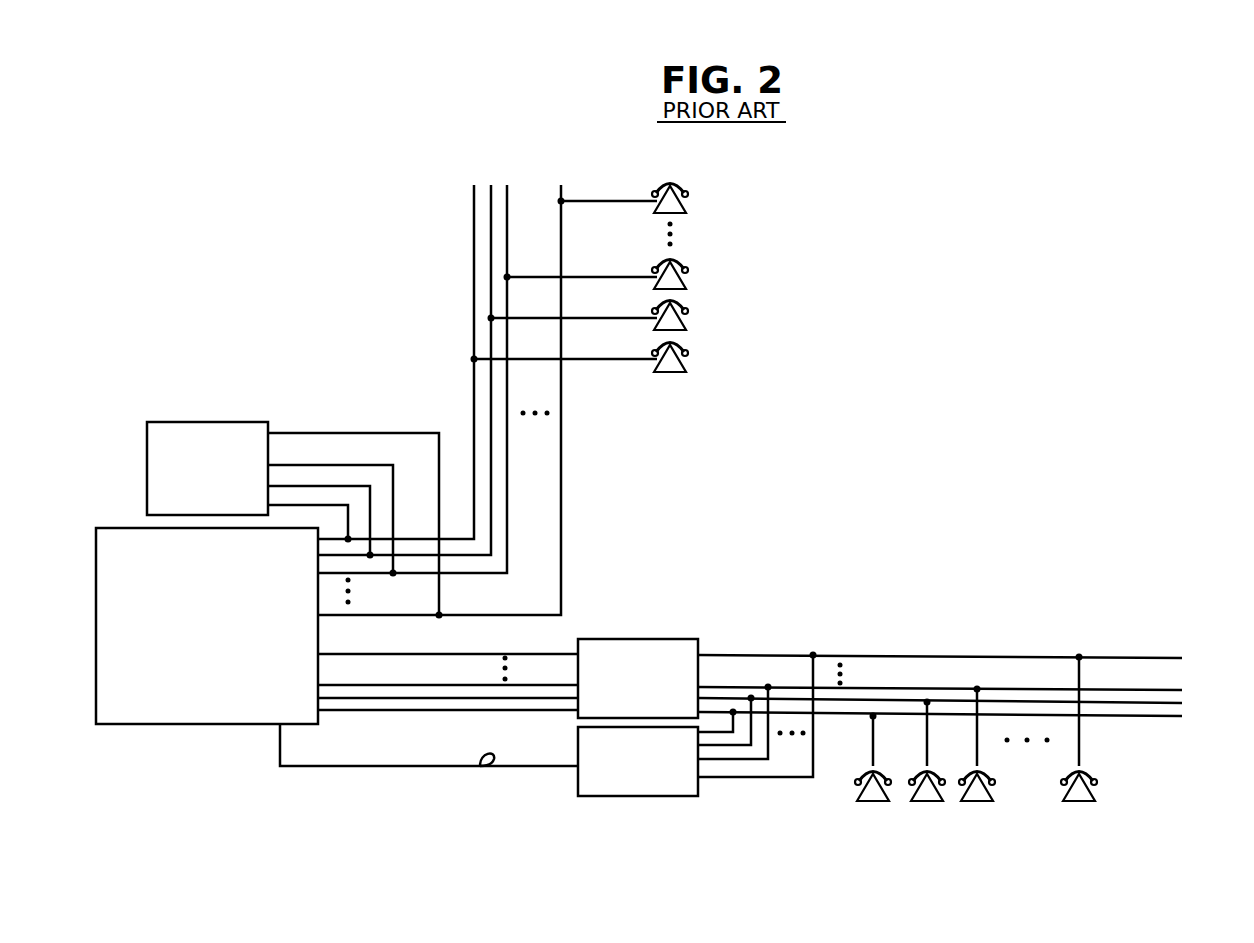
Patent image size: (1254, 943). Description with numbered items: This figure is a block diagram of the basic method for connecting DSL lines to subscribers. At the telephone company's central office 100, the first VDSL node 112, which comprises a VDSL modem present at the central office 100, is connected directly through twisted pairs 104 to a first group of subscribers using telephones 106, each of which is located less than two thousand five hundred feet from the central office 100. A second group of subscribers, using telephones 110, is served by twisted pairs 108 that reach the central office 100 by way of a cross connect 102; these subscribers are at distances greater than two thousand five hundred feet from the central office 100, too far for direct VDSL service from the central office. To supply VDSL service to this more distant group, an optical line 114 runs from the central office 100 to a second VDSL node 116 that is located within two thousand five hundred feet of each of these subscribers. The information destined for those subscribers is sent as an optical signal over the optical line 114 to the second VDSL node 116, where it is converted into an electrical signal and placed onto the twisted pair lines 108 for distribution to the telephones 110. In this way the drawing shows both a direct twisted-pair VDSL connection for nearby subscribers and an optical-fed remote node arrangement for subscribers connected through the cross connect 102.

The central office 100 is at (99, 527).
The cross connect 102 is at (613, 638).
The twisted pair lines 104 is at (467, 177).
The telephones 106 is at (696, 178).
The twisted pair lines 108 is at (1188, 655).
The telephones 110 is at (1095, 811).
The VDSL NODE 1 112 is at (150, 421).
The optical line 114 is at (372, 773).
The VDSL NODE 2 116 is at (617, 799).